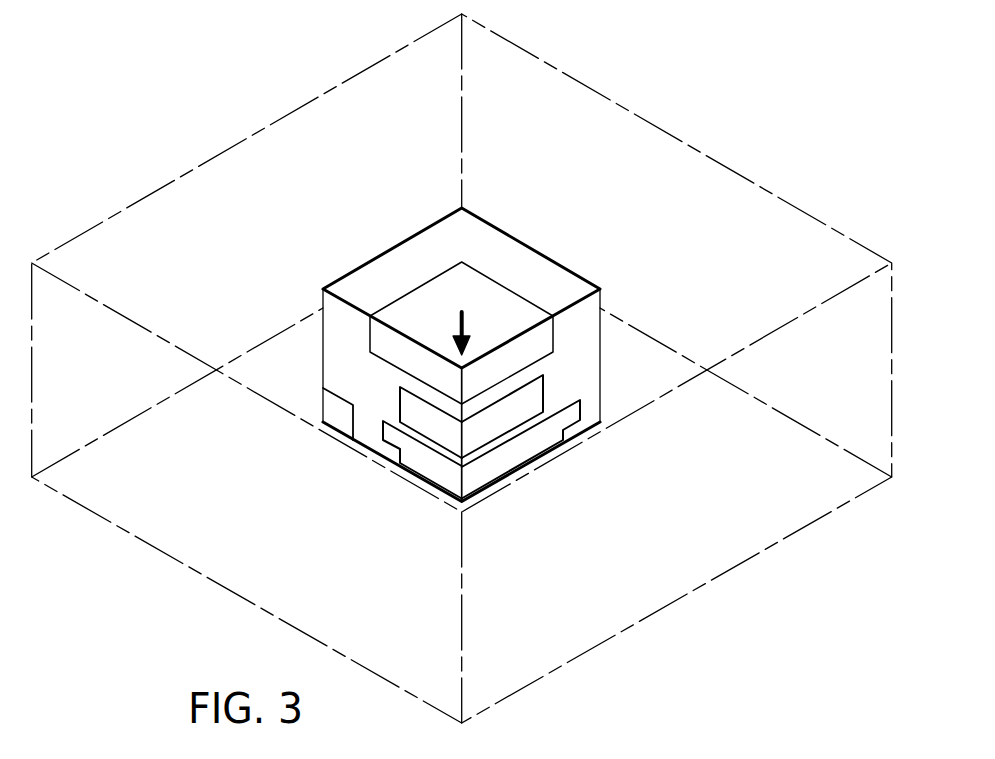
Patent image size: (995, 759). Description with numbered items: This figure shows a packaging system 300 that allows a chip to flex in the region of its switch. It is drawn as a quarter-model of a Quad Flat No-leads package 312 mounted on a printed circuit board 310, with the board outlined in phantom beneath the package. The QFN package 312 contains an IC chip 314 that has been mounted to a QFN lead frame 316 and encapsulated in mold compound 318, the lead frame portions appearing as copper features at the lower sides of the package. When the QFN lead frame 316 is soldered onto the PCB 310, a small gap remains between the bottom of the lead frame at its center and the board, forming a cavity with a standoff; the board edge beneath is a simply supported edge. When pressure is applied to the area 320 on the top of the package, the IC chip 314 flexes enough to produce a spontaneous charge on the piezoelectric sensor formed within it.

The IC package assembly with pressure test setup 300 is at (158, 61).
The printed circuit board 310 is at (717, 573).
The Quad Flat No-leads (QFN) package 312 is at (290, 375).
The IC chip 314 is at (532, 397).
The QFN lead frame 316 is at (338, 417).
The mold compound 318 is at (503, 300).
The area 320 is at (418, 306).